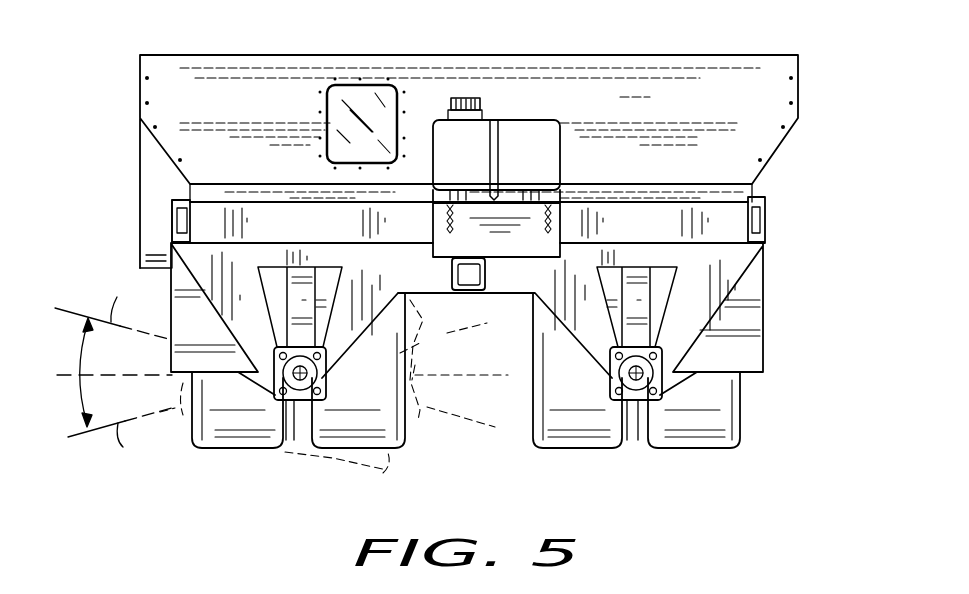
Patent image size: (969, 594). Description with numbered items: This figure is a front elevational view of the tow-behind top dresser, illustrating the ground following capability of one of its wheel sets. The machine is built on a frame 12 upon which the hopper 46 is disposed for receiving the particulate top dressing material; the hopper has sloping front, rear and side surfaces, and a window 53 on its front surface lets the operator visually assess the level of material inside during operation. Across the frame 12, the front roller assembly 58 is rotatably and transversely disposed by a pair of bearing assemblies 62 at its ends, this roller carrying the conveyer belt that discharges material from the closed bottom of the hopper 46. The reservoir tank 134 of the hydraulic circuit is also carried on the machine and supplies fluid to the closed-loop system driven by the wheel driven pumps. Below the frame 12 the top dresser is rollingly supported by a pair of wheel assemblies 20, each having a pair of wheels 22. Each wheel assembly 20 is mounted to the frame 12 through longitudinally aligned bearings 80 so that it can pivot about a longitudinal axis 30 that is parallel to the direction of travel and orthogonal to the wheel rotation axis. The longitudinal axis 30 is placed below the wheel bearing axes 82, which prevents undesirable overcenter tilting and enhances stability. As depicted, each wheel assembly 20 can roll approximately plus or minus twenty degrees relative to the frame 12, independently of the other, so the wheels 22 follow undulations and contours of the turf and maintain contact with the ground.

The frame 12 is at (712, 290).
The wheel assembly 20 is at (460, 272).
The wheels 22 is at (233, 450).
The longitudinal axis 30 is at (300, 400).
The hopper 46 is at (680, 67).
The window 53 is at (351, 93).
The front roller assembly 58 is at (217, 228).
The bearing assemblies 62 is at (173, 212).
The bearings 80 is at (636, 400).
The wheel bearing axes 82 is at (107, 375).
The reservoir tank 134 is at (509, 120).